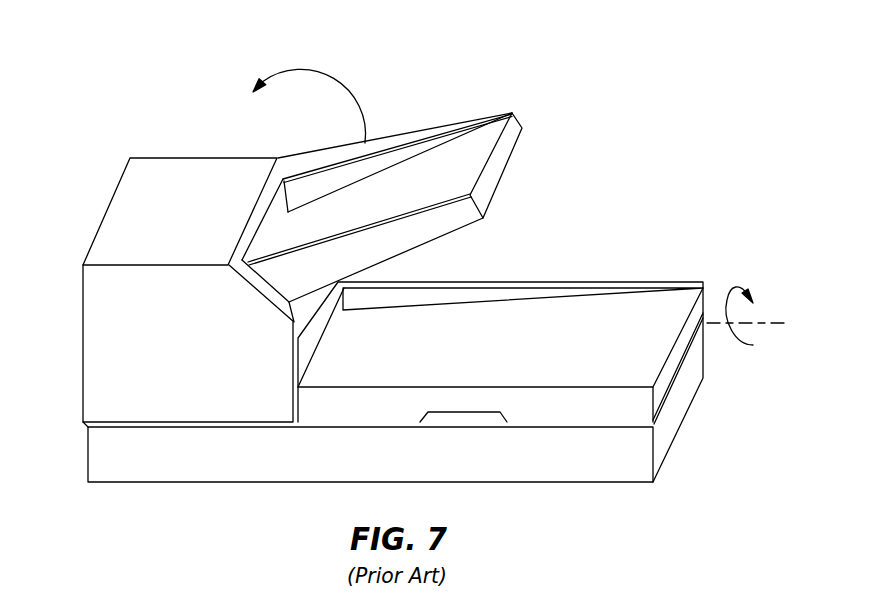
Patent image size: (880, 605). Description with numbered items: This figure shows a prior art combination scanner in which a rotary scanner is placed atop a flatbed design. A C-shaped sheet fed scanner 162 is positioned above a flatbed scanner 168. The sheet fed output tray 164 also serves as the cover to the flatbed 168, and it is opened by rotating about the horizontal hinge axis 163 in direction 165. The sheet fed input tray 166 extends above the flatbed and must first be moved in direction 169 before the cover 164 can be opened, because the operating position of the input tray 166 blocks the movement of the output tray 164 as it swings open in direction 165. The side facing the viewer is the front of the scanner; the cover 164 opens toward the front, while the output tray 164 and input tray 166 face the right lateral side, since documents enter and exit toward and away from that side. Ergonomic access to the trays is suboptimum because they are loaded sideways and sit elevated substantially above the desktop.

The C-shaped sheet fed scanner 162 is at (122, 218).
The horizontal hinge axis 163 is at (772, 325).
The sheet fed output tray 164 is at (593, 312).
The direction 165 is at (744, 280).
The sheet fed input tray 166 is at (487, 117).
The flatbed scanner 168 is at (540, 462).
The direction 169 is at (345, 82).